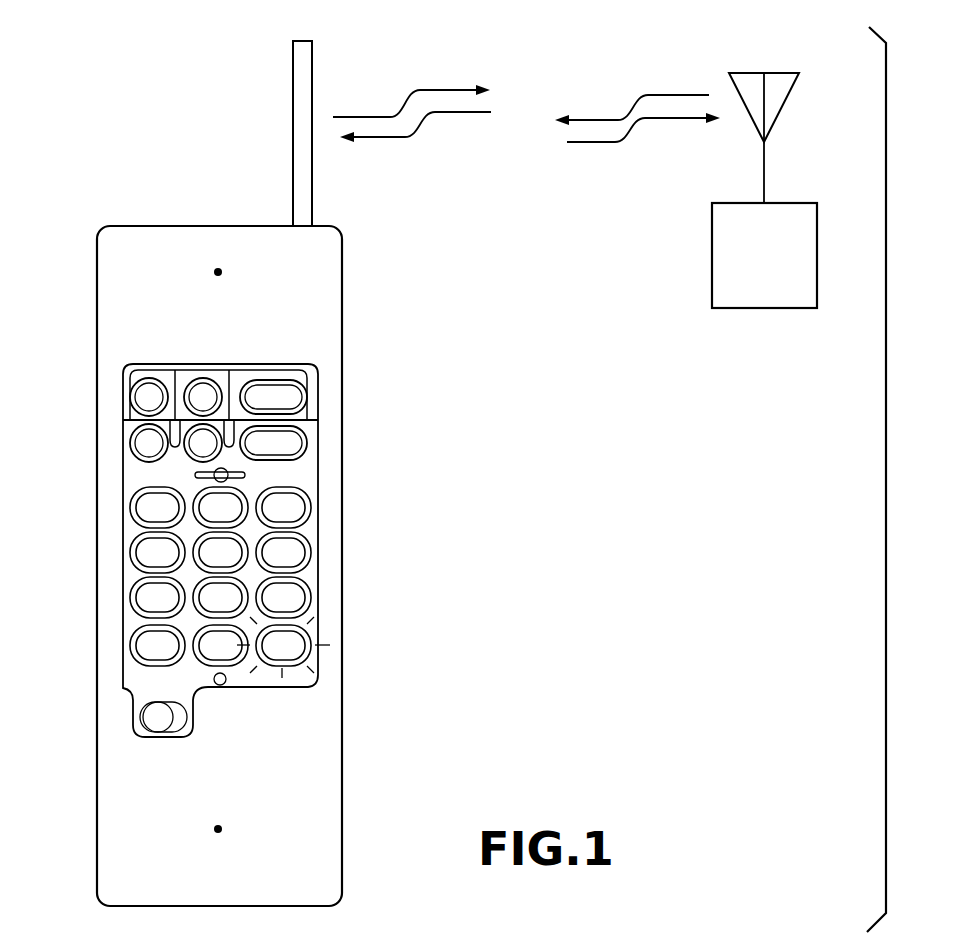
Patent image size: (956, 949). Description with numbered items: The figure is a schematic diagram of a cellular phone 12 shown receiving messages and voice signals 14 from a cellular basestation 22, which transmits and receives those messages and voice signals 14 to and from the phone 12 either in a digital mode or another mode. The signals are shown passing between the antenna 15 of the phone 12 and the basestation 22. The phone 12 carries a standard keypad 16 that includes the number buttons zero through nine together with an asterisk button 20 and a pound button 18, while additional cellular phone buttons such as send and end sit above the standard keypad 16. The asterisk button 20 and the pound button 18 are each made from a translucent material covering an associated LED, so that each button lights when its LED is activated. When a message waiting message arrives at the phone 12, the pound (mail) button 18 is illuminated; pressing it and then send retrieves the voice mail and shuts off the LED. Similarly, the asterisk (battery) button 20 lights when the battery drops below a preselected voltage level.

The cellular phone 12 is at (63, 148).
The messages and voice signals 14 is at (427, 89).
The antenna 15 is at (293, 121).
The standard keypad 16 is at (80, 440).
The pound button 18 is at (312, 650).
The asterisk button 20 is at (130, 641).
The cellular basestation 22 is at (834, 164).